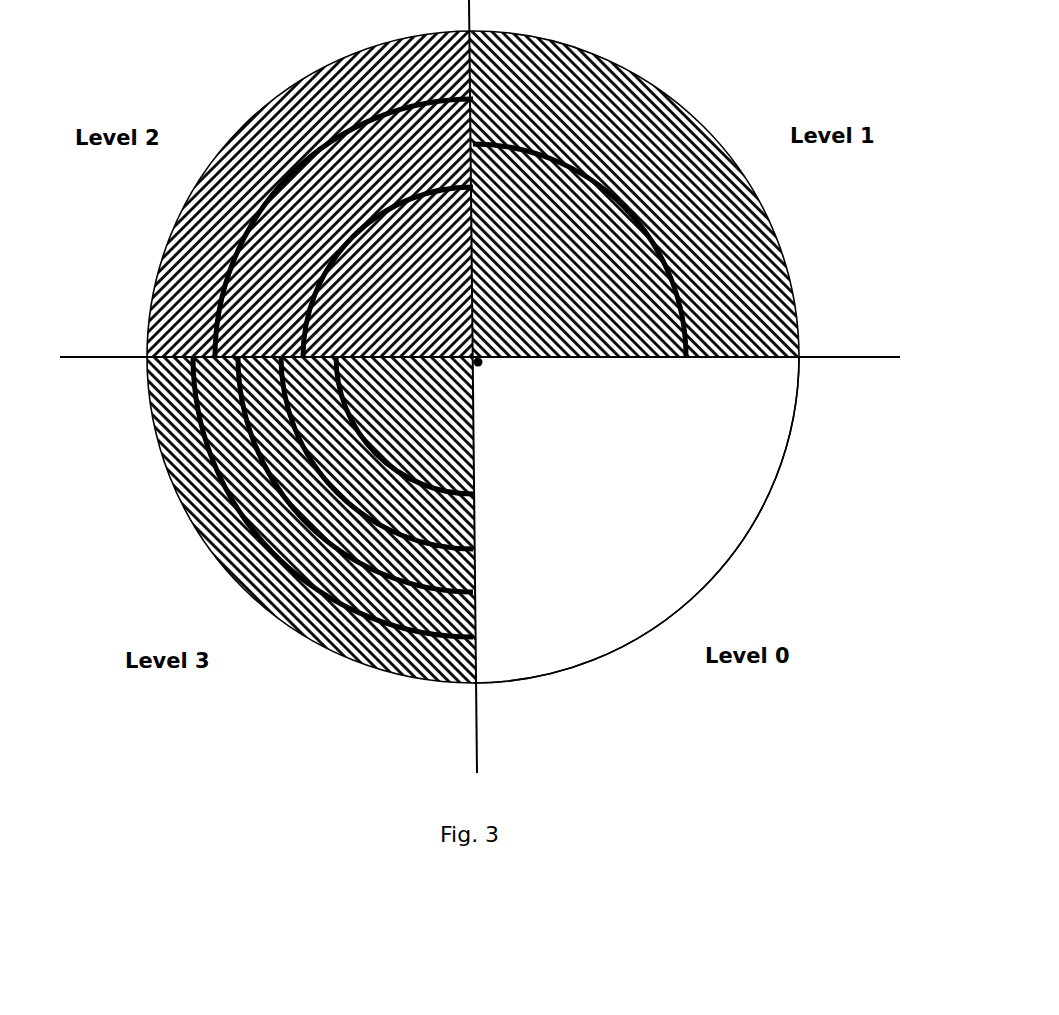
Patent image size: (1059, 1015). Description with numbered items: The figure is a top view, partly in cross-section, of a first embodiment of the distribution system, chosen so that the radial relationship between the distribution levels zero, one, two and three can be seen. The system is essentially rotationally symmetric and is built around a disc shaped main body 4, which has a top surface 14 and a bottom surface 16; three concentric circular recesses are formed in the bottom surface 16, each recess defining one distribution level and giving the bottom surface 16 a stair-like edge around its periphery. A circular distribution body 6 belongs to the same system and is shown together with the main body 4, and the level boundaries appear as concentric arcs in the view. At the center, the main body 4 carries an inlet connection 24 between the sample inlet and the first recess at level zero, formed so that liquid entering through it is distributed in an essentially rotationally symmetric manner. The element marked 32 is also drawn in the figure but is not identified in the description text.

The main body 4 is at (470, 386).
The top surface 14 is at (597, 98).
The bottom surface 16 is at (636, 520).
The circular distribution body 6 is at (450, 324).
The inlet connection 24 is at (485, 364).
The level 3 ring 32 is at (265, 490).